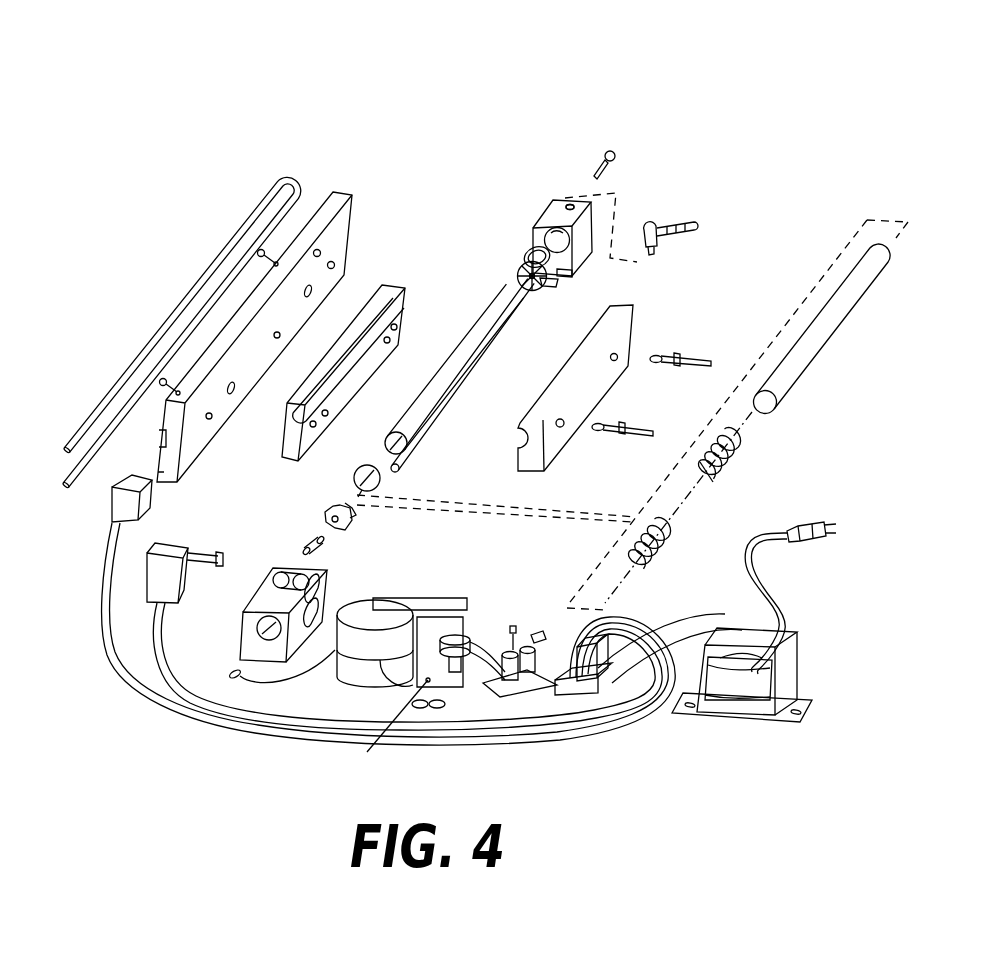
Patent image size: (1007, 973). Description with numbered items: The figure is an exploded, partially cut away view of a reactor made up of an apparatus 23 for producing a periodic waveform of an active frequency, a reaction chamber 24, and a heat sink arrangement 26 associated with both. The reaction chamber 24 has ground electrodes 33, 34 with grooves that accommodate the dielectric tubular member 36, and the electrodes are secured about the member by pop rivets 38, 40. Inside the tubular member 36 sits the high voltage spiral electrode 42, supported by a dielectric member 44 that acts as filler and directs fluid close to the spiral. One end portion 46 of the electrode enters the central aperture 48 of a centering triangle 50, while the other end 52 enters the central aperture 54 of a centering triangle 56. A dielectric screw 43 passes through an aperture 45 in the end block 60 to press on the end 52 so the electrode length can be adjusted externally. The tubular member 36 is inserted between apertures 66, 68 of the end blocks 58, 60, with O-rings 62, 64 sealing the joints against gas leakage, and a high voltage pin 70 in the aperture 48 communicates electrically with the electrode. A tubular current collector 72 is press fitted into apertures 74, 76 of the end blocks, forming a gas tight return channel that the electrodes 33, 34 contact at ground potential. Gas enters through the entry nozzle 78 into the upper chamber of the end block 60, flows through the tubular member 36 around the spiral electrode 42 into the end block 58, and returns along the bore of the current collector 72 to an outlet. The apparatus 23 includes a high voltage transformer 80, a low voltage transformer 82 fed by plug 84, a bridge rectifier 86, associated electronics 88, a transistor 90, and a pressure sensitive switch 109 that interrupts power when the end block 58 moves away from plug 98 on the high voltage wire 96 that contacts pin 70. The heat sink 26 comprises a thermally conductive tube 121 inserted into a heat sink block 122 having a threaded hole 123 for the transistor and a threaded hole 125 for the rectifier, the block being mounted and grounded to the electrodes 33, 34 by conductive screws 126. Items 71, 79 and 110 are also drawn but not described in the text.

The apparatus for producing a periodic waveform 23 is at (153, 716).
The reaction chamber 24 is at (695, 140).
The heat sink arrangement 26 is at (355, 92).
The ground electrode 33 is at (400, 300).
The ground electrode 34 is at (637, 318).
The dielectric tubular member 36 is at (490, 328).
The pop rivet 38 is at (676, 356).
The pop rivet 40 is at (625, 425).
The high voltage spiral electrode 42 is at (718, 479).
The screw 43 is at (599, 160).
The dielectric member 44 is at (820, 336).
The aperture 45 is at (572, 205).
The end portion of spiral electrode 46 is at (627, 583).
The central aperture 48 is at (338, 514).
The centering triangle 50 is at (353, 512).
The end of spiral electrode 52 is at (735, 432).
The central aperture 54 is at (547, 283).
The centering triangle 56 is at (518, 273).
The end block 58 is at (260, 606).
The end block 60 is at (553, 218).
The O-ring 62 is at (382, 481).
The O-ring 64 is at (524, 252).
The aperture 66 is at (281, 580).
The aperture 68 is at (545, 232).
The high voltage pin 70 is at (303, 543).
The hole 71 is at (262, 629).
The current collector 72 is at (470, 375).
The aperture 74 is at (318, 598).
The aperture 76 is at (571, 279).
The entry nozzle 78 is at (660, 222).
The cover 79 is at (615, 199).
The high voltage transformer 80 is at (373, 598).
The low voltage transformer 82 is at (757, 683).
The plug 84 is at (830, 527).
The bridge rectifier 86 is at (574, 690).
The associated electronics 88 is at (528, 686).
The transistor 90 is at (535, 630).
The high voltage wire 96 is at (305, 680).
The plug 98 is at (230, 671).
The switch 109 is at (160, 583).
The connector box 110 is at (119, 503).
The thermally conductive tube 121 is at (295, 172).
The heat sink block 122 is at (350, 192).
The threaded hole 123 is at (320, 250).
The threaded hole 125 is at (334, 263).
The conductive screws 126 is at (258, 250).